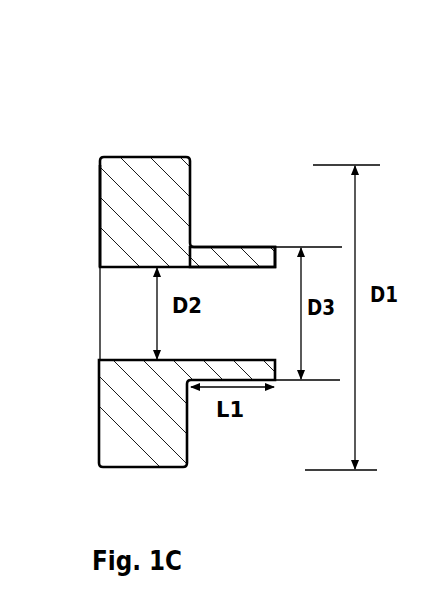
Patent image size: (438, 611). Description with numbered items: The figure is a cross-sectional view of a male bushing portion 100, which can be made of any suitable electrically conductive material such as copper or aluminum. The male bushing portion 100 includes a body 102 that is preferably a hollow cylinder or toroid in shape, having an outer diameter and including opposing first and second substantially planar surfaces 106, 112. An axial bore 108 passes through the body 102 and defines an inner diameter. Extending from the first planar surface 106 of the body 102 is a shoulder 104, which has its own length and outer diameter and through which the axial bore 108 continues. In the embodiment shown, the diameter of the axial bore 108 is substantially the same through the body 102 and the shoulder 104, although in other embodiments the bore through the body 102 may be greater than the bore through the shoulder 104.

The male bushing portion 100 is at (219, 248).
The body 102 is at (142, 183).
The shoulder 104 is at (240, 255).
The first planar surface 106 is at (182, 425).
The axial bore 108 is at (108, 320).
The second planar surface 112 is at (100, 198).